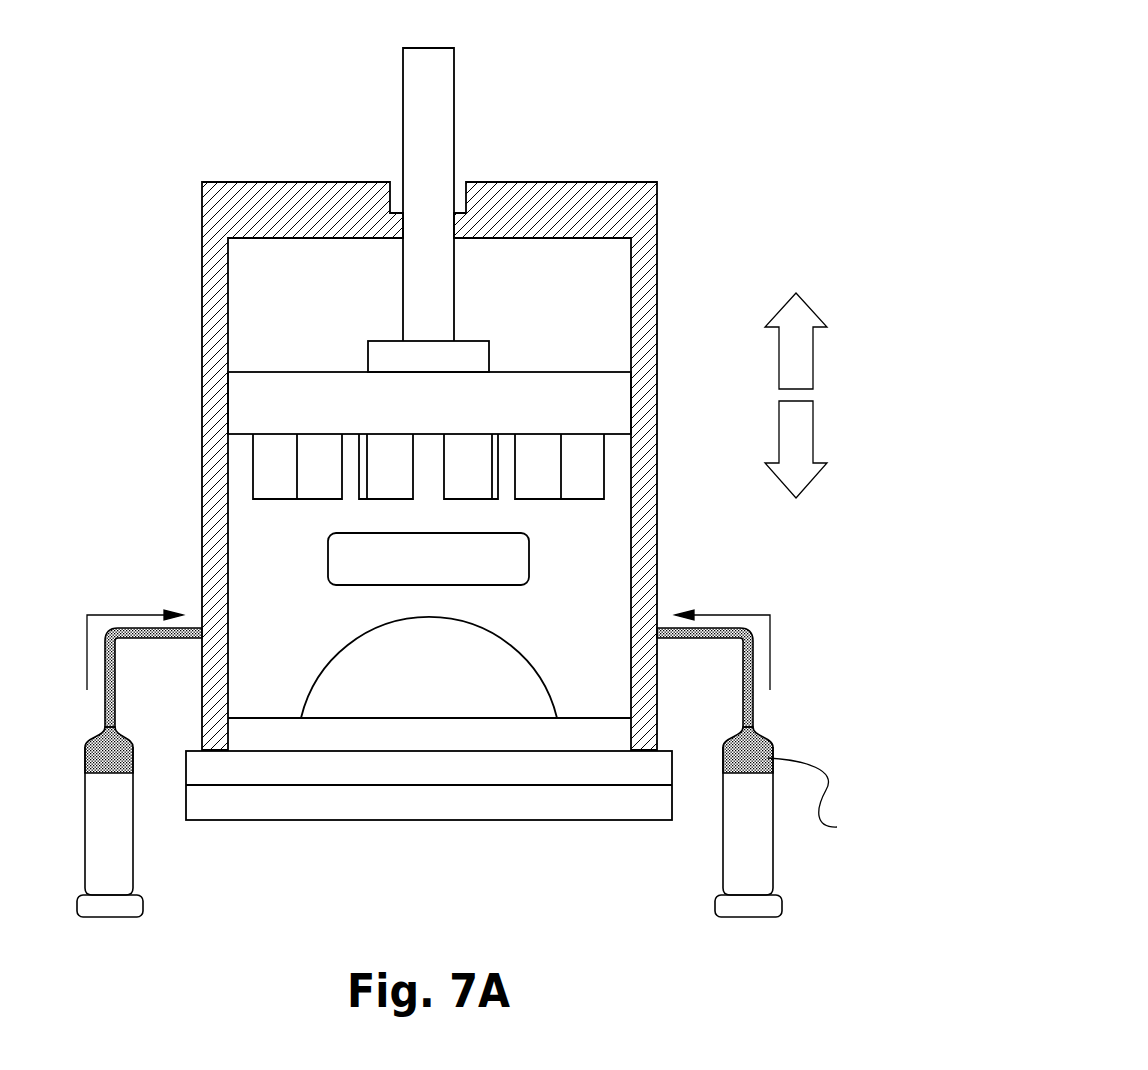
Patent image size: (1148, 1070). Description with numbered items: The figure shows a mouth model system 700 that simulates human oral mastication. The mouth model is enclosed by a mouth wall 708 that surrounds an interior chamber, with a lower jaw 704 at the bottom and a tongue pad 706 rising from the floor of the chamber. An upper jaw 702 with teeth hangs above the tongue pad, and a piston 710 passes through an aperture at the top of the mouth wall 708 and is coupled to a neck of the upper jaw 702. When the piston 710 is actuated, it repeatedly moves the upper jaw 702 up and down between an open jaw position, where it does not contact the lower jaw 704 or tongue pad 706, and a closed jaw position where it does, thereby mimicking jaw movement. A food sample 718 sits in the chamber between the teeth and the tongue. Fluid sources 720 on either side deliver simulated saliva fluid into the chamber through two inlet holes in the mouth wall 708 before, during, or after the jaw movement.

The mouth model system 700 is at (829, 37).
The upper jaw 702 is at (602, 402).
The lower jaw 704 is at (551, 769).
The tongue pad 706 is at (337, 672).
The mouth wall 708 is at (643, 527).
The piston 710 is at (437, 128).
The food sample 718 is at (337, 558).
The fluid source 720 is at (753, 715).